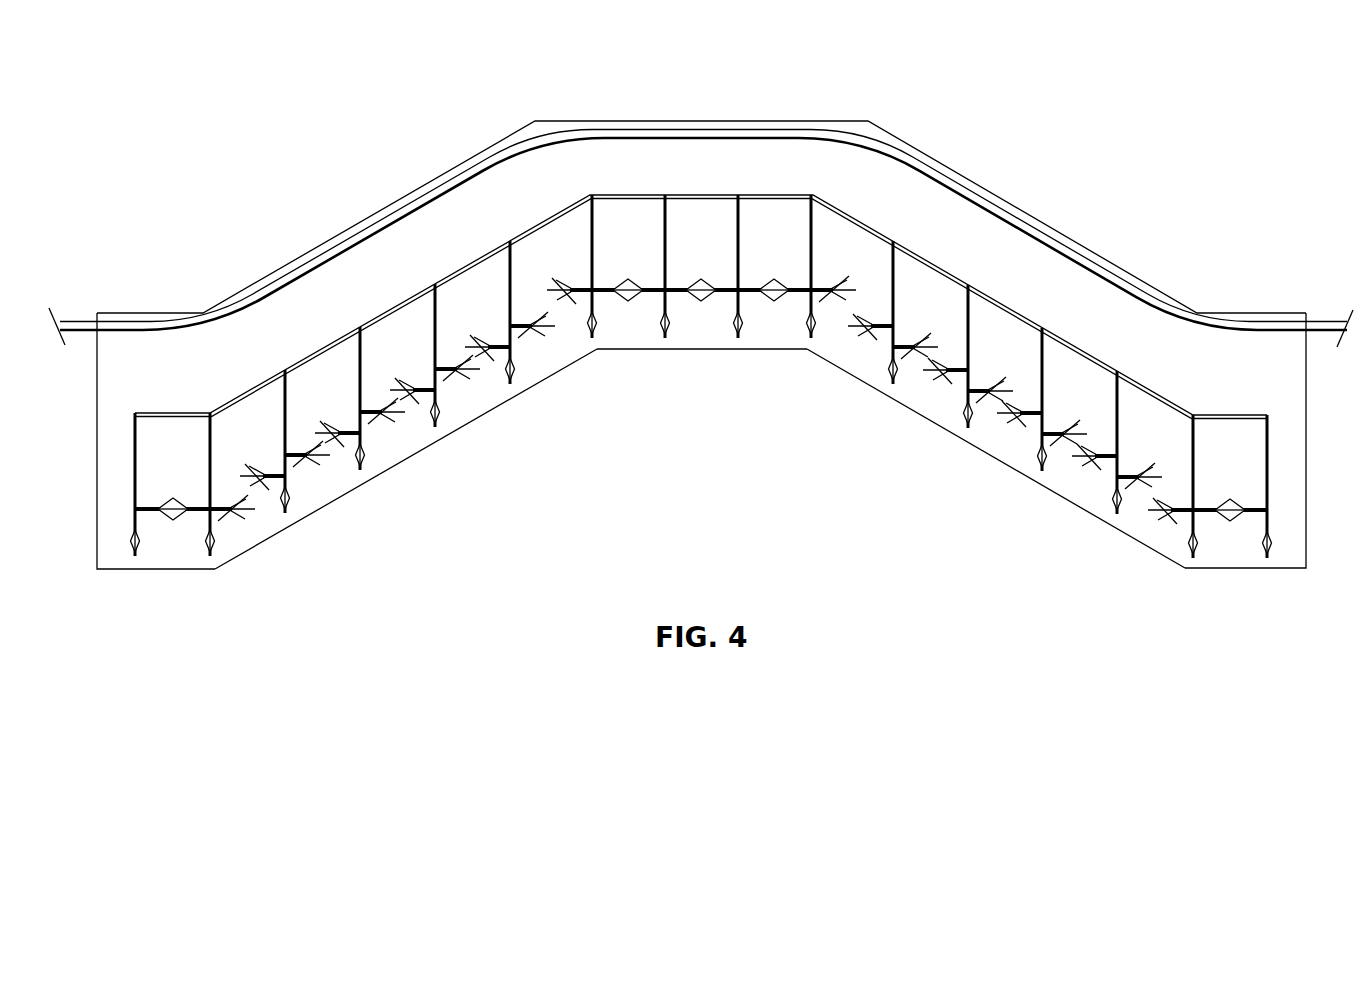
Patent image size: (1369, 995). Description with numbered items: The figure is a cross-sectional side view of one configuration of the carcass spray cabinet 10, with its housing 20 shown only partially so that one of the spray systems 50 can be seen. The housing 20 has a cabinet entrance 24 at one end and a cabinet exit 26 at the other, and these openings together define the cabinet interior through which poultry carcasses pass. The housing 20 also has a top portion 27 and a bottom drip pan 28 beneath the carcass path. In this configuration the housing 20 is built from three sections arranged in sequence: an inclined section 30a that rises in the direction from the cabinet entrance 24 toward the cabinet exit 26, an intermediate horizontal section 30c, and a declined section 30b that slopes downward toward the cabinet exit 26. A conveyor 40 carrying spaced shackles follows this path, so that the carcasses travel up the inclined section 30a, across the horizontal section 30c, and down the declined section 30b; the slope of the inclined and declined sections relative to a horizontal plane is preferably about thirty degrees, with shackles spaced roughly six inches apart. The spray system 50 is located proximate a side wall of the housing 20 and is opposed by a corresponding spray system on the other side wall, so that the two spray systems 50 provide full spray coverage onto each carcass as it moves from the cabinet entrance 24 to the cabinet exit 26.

The carcass spray cabinet 10 is at (392, 122).
The housing 20 is at (374, 243).
The cabinet entrance 24 is at (98, 487).
The cabinet exit 26 is at (1306, 473).
The top portion 27 is at (150, 320).
The bottom drip pan 28 is at (260, 538).
The inclined section 30a is at (603, 368).
The declined section 30b is at (807, 368).
The intermediate horizontal section 30c is at (807, 368).
The conveyor 40 is at (913, 167).
The spray system 50 is at (240, 393).